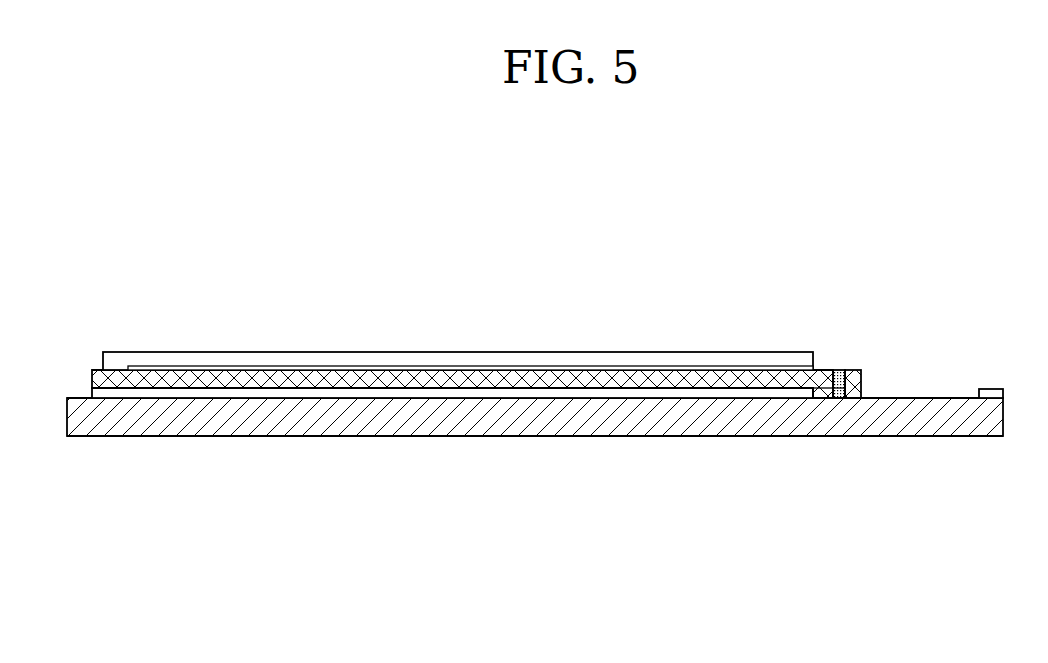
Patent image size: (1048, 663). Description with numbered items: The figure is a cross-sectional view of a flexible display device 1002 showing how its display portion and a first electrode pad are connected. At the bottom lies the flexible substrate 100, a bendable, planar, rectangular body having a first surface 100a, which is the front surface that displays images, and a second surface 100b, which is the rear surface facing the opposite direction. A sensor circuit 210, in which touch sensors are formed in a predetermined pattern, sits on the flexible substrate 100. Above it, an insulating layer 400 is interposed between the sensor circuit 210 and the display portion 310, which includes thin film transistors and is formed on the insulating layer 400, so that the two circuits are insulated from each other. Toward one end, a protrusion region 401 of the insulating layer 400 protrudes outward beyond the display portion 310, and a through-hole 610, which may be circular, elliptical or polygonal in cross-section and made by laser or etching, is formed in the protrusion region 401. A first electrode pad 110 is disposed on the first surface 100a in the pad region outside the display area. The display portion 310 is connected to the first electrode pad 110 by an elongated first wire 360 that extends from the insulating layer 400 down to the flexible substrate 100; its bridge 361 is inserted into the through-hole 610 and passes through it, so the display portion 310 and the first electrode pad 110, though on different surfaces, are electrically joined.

The flexible substrate 100 is at (325, 420).
The first surface 100a is at (553, 400).
The second surface 100b is at (571, 437).
The first electrode pad 110 is at (990, 389).
The sensor circuit 210 is at (371, 394).
The display portion 310 is at (220, 358).
The first wire 360 is at (651, 368).
The bridge 361 is at (838, 375).
The insulating layer 400 is at (466, 380).
The protrusion region 401 is at (858, 370).
The through-hole 610 is at (842, 387).
The flexible display device 1002 is at (720, 328).